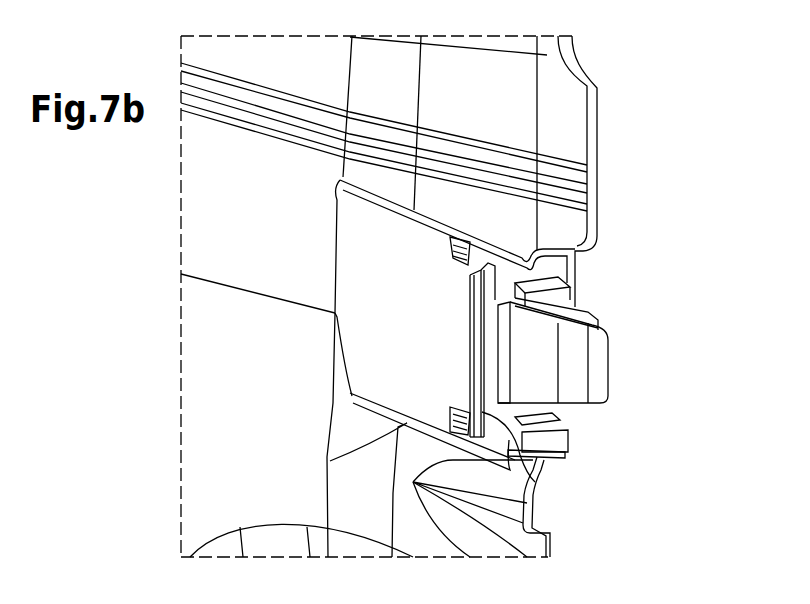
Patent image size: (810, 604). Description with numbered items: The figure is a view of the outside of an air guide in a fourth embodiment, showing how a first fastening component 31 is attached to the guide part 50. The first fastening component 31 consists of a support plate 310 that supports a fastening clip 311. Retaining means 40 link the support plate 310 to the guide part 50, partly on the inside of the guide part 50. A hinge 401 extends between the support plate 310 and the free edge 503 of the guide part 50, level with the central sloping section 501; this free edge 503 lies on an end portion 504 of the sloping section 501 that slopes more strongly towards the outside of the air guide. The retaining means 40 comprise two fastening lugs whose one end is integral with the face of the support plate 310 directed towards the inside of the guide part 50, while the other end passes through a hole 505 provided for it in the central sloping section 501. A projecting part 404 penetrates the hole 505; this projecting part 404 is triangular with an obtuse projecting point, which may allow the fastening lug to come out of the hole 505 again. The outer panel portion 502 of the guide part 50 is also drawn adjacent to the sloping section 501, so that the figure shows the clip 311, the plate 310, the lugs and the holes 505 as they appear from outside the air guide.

The guide part 50 is at (286, 343).
The central sloping section 501 is at (385, 232).
The side panel 502 is at (517, 232).
The free edge 503 is at (545, 486).
The end portion 504 is at (472, 225).
The hole 505 is at (450, 245).
The retaining means 40 is at (460, 302).
The hinge 401 is at (478, 387).
The projecting part 404 is at (330, 461).
The first fastening component 31 is at (700, 217).
The support plate 310 is at (573, 275).
The fastening clip 311 is at (580, 357).